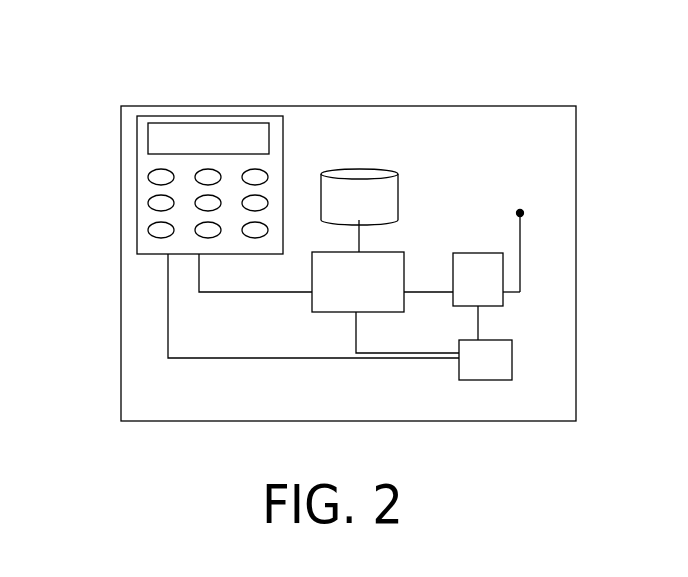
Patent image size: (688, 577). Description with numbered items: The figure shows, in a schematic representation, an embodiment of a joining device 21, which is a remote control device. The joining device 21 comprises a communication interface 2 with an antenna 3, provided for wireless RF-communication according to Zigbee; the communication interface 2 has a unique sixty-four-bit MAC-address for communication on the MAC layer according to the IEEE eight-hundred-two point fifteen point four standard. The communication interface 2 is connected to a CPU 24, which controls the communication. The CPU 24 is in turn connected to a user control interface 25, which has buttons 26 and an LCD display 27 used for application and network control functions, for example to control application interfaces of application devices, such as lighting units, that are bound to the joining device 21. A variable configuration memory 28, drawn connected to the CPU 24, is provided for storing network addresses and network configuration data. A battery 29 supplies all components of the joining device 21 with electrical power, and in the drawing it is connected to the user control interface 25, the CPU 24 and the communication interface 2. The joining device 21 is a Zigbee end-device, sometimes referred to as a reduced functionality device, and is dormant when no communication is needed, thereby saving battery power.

The joining device 21 is at (368, 106).
The user control interface 25 is at (284, 153).
The LCD display 27 is at (213, 123).
The buttons 26 is at (150, 176).
The variable configuration memory 28 is at (344, 208).
The CPU 24 is at (342, 296).
The communication interface 2 is at (469, 292).
The battery 29 is at (470, 372).
The antenna 3 is at (521, 247).